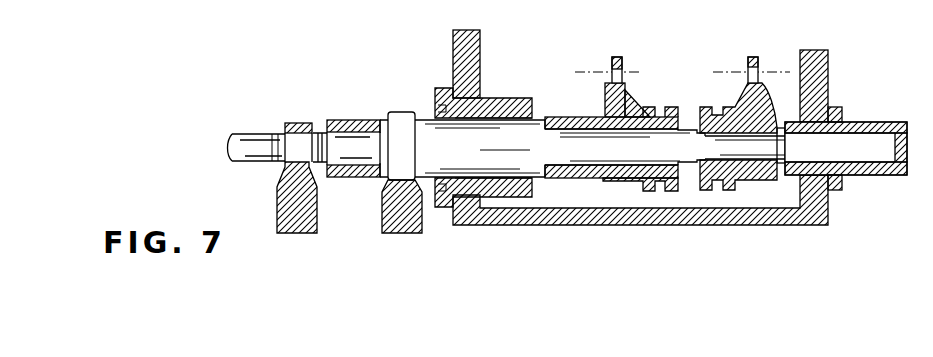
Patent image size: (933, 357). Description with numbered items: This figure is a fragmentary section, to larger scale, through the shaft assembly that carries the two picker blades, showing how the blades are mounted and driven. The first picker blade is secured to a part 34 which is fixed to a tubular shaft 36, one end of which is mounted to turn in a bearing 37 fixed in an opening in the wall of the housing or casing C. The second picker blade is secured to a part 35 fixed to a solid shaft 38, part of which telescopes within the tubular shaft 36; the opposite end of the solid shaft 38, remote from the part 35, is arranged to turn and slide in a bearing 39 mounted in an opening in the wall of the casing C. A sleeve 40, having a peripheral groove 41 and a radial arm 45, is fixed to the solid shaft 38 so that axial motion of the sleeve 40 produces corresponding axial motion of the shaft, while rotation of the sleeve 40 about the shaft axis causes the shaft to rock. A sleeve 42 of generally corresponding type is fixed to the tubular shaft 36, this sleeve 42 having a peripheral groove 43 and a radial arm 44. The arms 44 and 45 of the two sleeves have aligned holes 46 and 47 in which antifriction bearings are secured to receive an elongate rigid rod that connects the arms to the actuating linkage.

The housing or casing C is at (456, 42).
The part carrying picker blade K1 34 is at (392, 226).
The part carrying picker blade K2 35 is at (276, 215).
The tubular shaft 36 is at (355, 121).
The bearing 37 is at (500, 99).
The solid shaft 38 is at (305, 142).
The bearing 39 is at (823, 103).
The sleeve 40 is at (776, 118).
The peripheral groove 41 is at (713, 107).
The sleeve 42 is at (630, 116).
The peripheral groove 43 is at (657, 109).
The radial arm 44 is at (606, 100).
The radial arm 45 is at (756, 57).
The hole 46 is at (609, 70).
The hole 47 is at (763, 75).